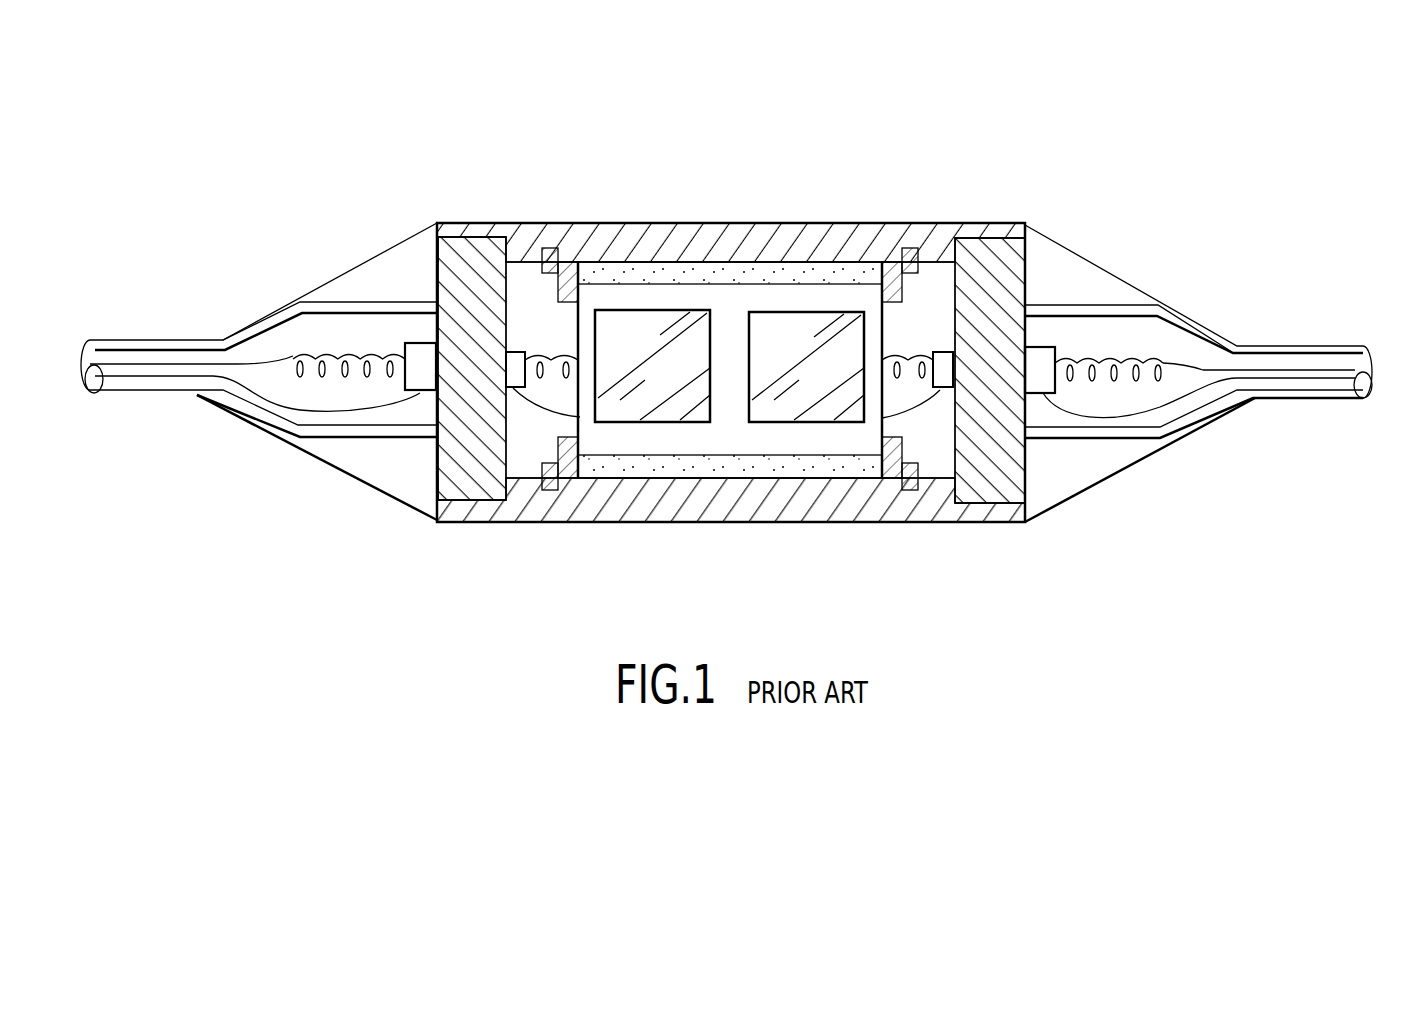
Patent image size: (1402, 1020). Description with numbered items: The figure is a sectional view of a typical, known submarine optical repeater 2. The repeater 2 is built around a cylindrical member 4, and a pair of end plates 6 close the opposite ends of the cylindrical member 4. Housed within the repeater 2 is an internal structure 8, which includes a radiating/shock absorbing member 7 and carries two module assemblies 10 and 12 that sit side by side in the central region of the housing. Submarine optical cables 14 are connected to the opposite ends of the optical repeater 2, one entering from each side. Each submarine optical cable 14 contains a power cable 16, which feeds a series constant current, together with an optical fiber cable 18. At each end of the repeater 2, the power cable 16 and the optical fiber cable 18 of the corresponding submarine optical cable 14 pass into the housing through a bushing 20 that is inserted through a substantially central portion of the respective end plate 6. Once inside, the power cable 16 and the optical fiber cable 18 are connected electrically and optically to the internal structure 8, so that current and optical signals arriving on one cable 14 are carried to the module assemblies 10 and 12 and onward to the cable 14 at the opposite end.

The submarine optical repeater 2 is at (650, 165).
The cylindrical member 4 is at (740, 245).
The end plate 6 is at (437, 473).
The radiating/shock absorbing member 7 is at (842, 270).
The internal structure 8 is at (733, 437).
The module assembly 10 is at (632, 422).
The module assembly 12 is at (827, 422).
The submarine optical cable 14 is at (146, 340).
The power cable 16 is at (547, 355).
The optical fiber cable 18 is at (267, 390).
The bushing 20 is at (420, 353).